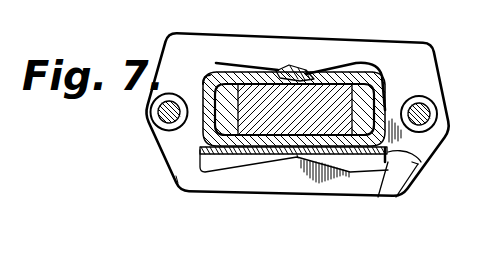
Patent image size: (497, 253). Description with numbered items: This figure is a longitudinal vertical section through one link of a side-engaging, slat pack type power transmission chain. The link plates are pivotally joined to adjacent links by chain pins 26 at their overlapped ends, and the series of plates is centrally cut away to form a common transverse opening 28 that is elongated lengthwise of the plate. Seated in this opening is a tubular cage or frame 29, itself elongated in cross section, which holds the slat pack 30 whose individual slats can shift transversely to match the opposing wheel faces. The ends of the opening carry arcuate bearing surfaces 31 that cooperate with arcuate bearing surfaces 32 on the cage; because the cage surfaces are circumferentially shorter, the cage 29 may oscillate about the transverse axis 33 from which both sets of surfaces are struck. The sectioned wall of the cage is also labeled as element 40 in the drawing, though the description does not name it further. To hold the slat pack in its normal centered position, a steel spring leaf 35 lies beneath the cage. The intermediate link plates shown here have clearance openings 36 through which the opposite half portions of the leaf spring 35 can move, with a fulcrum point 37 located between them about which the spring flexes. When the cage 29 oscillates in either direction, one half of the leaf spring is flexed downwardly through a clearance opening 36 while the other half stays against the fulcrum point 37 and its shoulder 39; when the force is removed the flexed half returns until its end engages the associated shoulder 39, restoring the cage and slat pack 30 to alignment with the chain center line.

The chain pin 26 is at (437, 113).
The common transverse opening 28 is at (358, 62).
The cage or frame 29 is at (210, 85).
The slat pack 30 is at (313, 162).
The arcuate bearing surfaces 31 is at (215, 65).
The arcuate bearing surfaces 32 is at (204, 133).
The transverse axis 33 is at (268, 158).
The steel spring leaf 35 is at (410, 177).
The clearance openings 36 is at (215, 173).
The fulcrum point 37 is at (177, 178).
The shoulder 39 is at (200, 150).
The hatched sleeve 40 is at (213, 100).